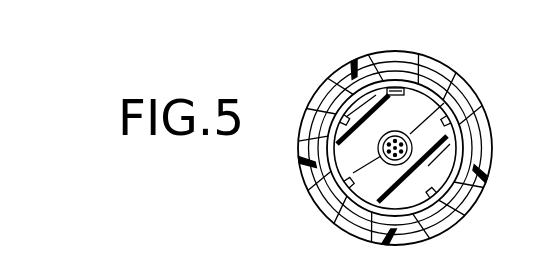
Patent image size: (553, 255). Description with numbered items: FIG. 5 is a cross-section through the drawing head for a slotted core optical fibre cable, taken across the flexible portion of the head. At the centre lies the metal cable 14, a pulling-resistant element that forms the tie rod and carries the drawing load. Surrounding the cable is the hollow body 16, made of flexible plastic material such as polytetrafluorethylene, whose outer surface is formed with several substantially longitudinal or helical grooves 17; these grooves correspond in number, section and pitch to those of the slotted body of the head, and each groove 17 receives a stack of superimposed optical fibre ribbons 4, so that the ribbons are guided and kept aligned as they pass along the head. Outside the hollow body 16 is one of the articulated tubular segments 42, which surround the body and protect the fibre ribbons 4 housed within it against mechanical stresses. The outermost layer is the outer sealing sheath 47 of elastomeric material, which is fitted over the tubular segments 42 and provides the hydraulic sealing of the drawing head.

The optical fibre ribbon 4 is at (394, 88).
The tubular segment 42 is at (348, 86).
The outer sealing sheath 47 is at (497, 87).
The groove 17 is at (337, 127).
The hollow body 16 is at (304, 153).
The metal cable 14 is at (476, 175).